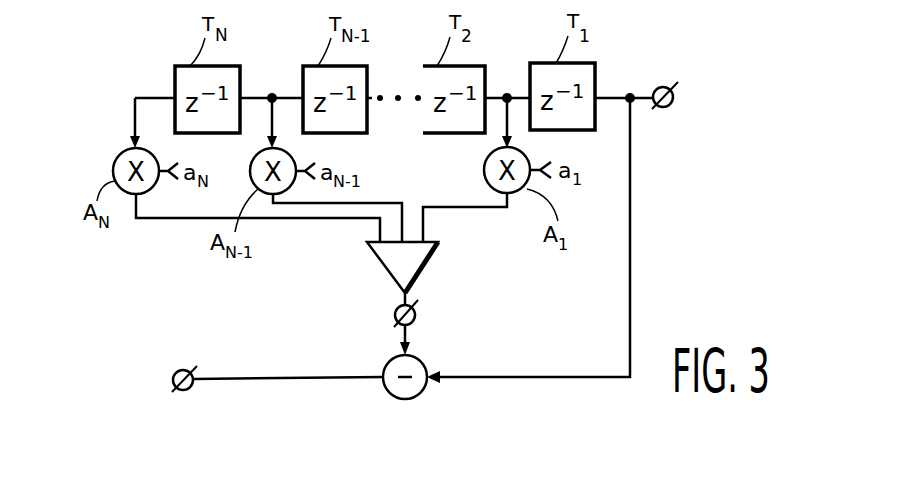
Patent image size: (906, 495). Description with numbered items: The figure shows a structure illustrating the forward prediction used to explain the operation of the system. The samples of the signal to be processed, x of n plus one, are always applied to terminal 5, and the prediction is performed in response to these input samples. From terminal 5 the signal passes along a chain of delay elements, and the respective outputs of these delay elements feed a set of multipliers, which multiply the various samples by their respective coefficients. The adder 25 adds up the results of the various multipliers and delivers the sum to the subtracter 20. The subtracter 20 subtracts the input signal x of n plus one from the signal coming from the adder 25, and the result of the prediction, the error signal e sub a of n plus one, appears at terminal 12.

The terminal 5 is at (659, 86).
The terminal 12 is at (170, 379).
The subtracter 20 is at (390, 362).
The adder 25 is at (428, 266).